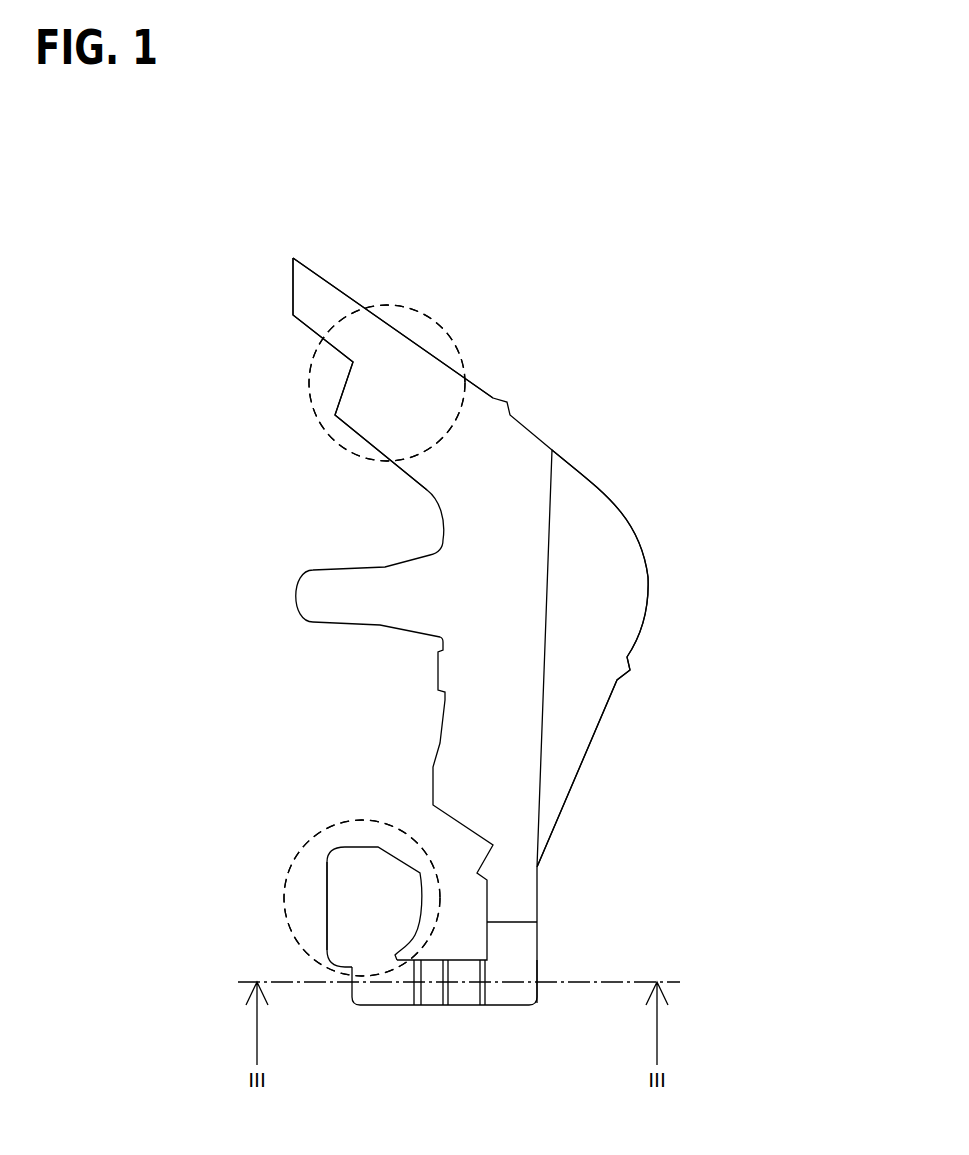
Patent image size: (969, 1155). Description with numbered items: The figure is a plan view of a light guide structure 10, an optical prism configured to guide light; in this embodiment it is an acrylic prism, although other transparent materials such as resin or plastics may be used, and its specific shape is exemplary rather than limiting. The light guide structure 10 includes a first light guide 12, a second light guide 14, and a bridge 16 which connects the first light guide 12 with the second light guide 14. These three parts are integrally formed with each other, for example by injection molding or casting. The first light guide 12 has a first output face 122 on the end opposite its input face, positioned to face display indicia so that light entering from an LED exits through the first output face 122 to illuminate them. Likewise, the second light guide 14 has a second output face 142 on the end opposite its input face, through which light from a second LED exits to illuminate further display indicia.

The light guide structure 10 is at (588, 291).
The first light guide 12 is at (330, 857).
The first output face 122 is at (285, 898).
The second light guide 14 is at (407, 330).
The second output face 142 is at (455, 348).
The bridge 16 is at (387, 1005).